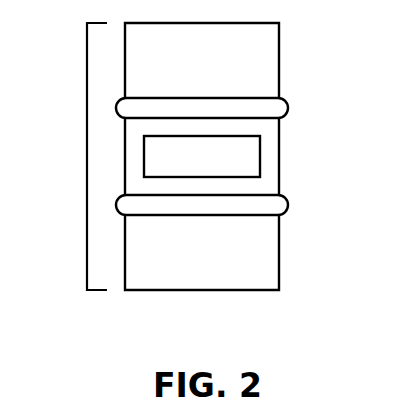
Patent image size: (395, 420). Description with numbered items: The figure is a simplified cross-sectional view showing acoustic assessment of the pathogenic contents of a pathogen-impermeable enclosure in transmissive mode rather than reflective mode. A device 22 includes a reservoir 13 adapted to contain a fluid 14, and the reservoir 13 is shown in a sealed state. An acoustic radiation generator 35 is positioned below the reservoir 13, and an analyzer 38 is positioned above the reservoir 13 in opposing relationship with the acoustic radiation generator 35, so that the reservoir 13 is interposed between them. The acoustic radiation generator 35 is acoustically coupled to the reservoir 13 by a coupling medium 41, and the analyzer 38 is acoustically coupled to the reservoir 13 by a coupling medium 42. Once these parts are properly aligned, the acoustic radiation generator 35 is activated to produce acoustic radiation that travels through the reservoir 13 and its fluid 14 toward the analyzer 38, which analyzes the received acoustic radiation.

The device 22 is at (87, 157).
The analyzer 38 is at (213, 74).
The acoustic radiation generator 35 is at (213, 264).
The reservoir 13 is at (270, 160).
The fluid 14 is at (212, 170).
The coupling medium 42 is at (288, 108).
The coupling medium 41 is at (288, 205).